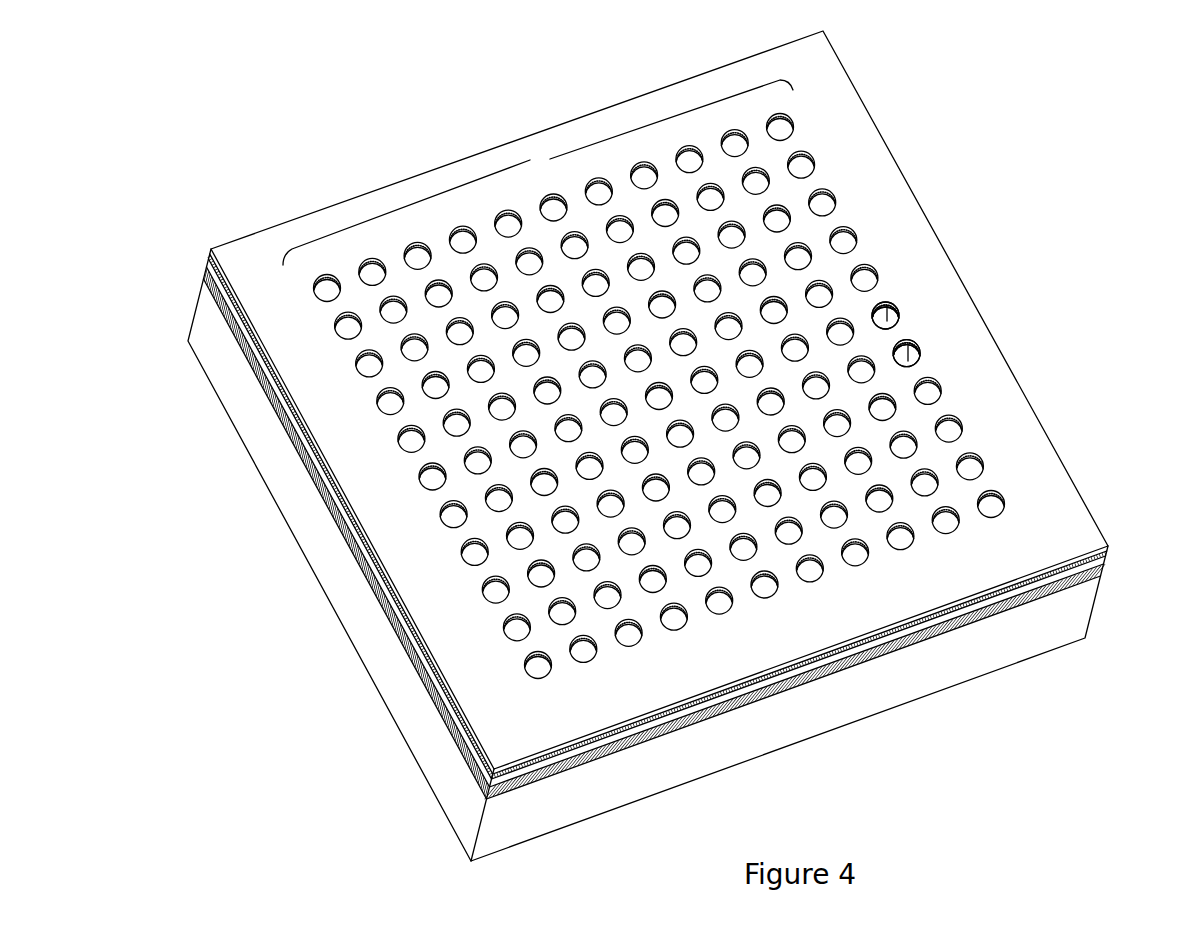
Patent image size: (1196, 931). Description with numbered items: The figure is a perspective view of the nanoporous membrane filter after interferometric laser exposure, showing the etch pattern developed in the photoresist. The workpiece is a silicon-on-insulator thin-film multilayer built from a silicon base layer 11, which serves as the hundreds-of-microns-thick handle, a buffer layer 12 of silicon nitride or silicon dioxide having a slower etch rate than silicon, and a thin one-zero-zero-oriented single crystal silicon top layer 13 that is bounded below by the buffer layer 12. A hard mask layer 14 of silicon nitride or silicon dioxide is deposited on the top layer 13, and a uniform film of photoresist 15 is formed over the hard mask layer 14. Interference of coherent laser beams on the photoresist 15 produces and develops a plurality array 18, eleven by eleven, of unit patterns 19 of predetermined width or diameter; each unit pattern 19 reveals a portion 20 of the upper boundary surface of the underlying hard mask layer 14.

The silicon base layer 11 is at (195, 318).
The buffer layer 12 is at (203, 283).
The single crystal silicon top layer 13 is at (204, 271).
The hard mask layer 14 is at (1108, 554).
The photoresist 15 is at (1108, 547).
The plurality array 18 is at (550, 159).
The unit patterns 19 is at (868, 268).
The portion of upper boundary surface of hard mask layer 20 is at (887, 306).